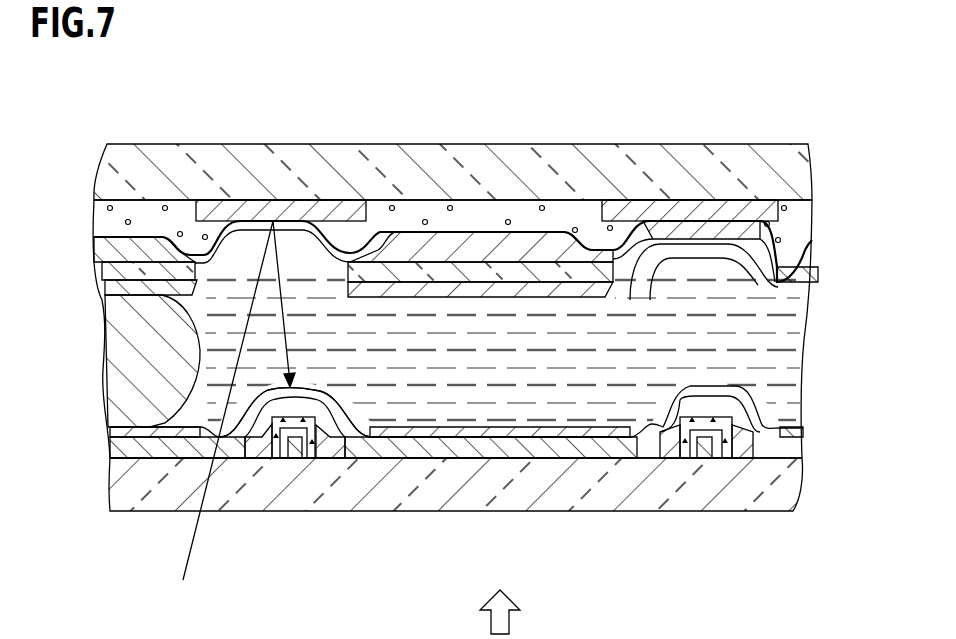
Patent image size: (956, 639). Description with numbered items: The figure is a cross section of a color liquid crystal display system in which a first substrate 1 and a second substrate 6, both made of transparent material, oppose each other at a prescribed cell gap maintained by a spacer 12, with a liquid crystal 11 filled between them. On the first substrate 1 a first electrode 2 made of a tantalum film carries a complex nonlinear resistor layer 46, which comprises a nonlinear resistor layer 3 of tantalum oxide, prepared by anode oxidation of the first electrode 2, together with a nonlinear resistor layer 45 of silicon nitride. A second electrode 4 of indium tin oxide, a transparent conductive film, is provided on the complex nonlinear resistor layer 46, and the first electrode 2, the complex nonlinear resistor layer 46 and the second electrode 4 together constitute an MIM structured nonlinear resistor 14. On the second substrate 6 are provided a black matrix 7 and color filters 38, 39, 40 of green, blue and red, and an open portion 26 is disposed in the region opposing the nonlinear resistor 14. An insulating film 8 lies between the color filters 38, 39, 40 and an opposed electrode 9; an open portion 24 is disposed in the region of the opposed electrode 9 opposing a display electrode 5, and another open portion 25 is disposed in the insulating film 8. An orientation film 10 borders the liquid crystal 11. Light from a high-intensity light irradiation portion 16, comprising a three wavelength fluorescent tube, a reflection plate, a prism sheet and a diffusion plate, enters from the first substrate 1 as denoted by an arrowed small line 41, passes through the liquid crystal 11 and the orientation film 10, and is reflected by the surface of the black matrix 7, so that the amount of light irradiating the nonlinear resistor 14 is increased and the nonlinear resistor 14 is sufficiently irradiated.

The first substrate 1 is at (790, 497).
The first electrode 2 is at (278, 462).
The nonlinear resistor layer 3 is at (300, 462).
The second electrode 4 is at (320, 410).
The display electrode 5 is at (550, 462).
The second substrate 6 is at (790, 170).
The black matrix 7 is at (277, 200).
The insulating film 8 is at (800, 247).
The opposed electrode 9 is at (566, 300).
The orientation film 10 is at (812, 323).
The liquid crystal 11 is at (780, 372).
The spacer 12 is at (115, 410).
The nonlinear resistor 14 is at (305, 410).
The high-intensity light irradiation portion 16 is at (509, 627).
The open portion 24 is at (622, 282).
The open portion 25 is at (640, 278).
The open portion 26 is at (672, 255).
The color filter 38 is at (540, 200).
The color filter 39 is at (812, 222).
The color filter 40 is at (103, 226).
The arrowed small line 41 is at (188, 570).
The nonlinear resistor layer 45 is at (322, 462).
The complex nonlinear resistor layer 46 is at (499, 517).